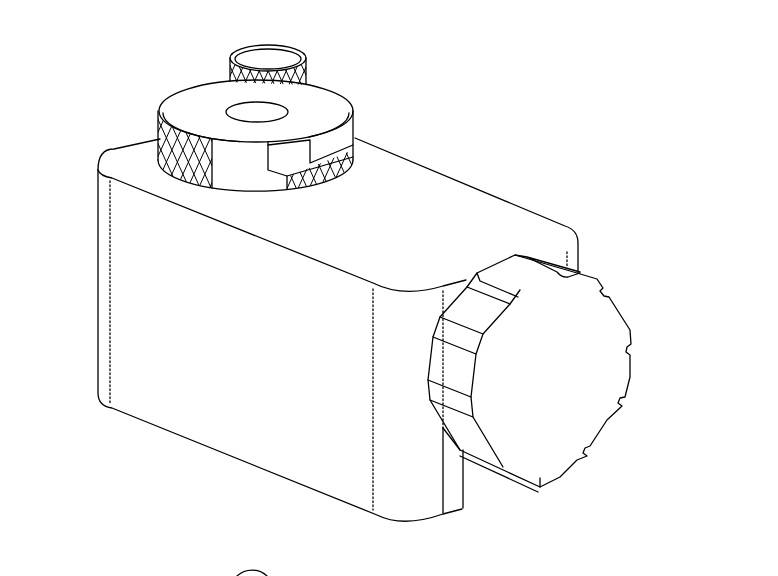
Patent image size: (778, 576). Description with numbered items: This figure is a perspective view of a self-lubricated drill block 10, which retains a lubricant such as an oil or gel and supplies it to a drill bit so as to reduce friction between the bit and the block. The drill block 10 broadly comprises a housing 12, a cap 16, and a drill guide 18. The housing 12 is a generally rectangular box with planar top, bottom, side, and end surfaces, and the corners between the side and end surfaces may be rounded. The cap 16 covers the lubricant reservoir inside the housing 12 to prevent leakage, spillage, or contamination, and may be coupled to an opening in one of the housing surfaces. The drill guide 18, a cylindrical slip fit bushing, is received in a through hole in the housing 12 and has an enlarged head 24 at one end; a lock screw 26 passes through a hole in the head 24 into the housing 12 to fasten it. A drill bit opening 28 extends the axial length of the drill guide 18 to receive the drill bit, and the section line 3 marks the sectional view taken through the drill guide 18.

The self-lubricated drill block 10 is at (533, 84).
The housing 12 is at (77, 272).
The cap 16 is at (615, 363).
The drill guide 18 is at (385, 118).
The head 24 is at (187, 110).
The lock screw 26 is at (277, 53).
The drill bit opening 28 is at (247, 105).
The section line 3- 3 is at (120, 60).